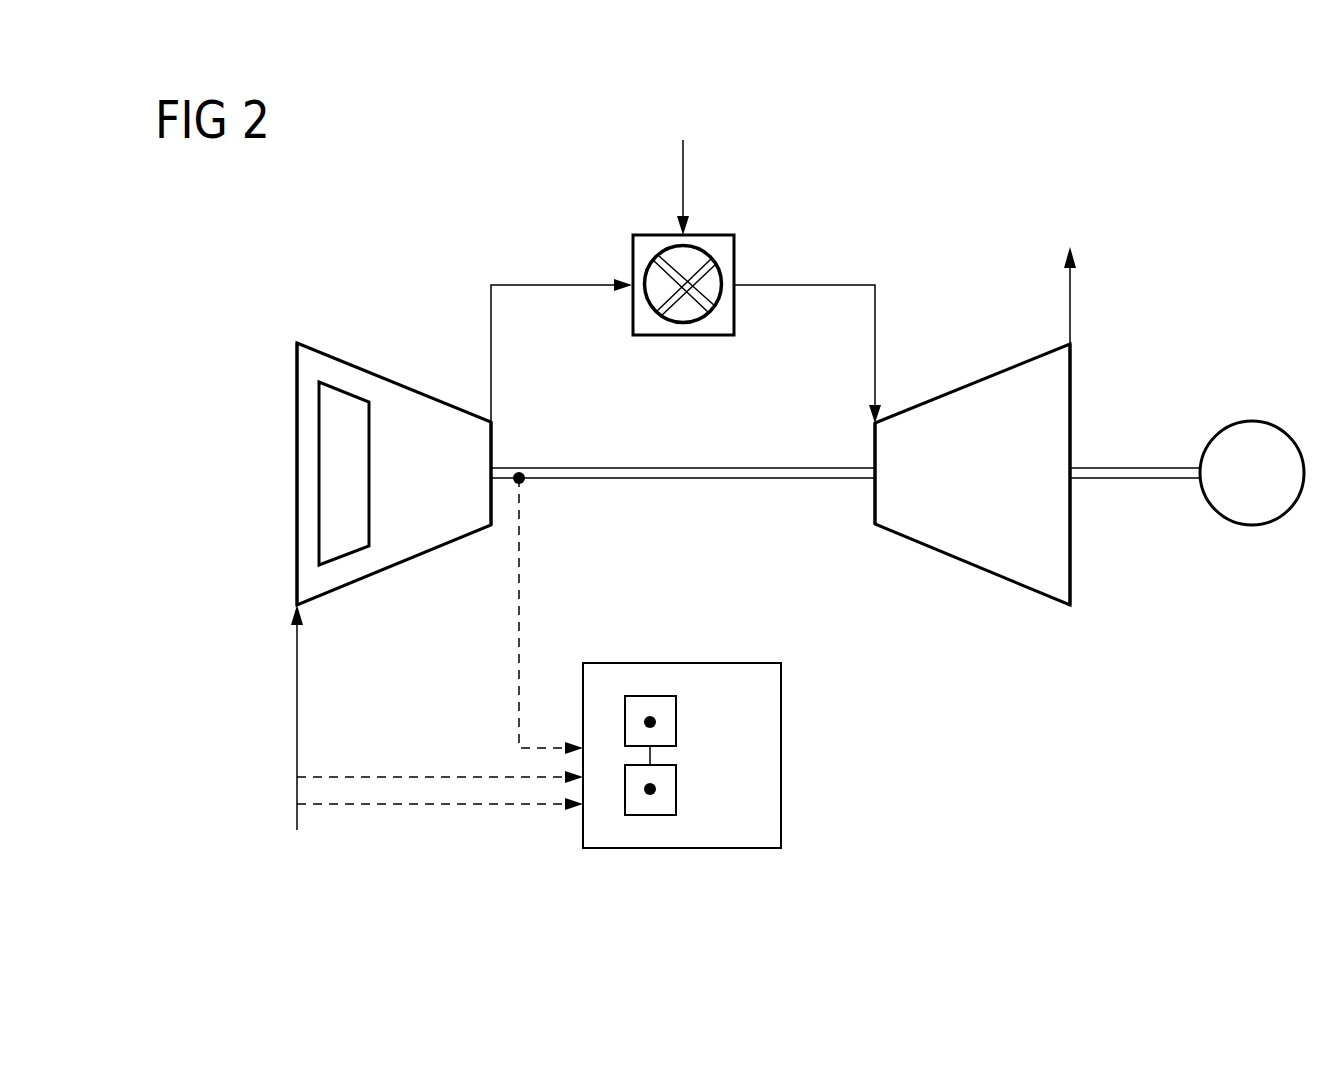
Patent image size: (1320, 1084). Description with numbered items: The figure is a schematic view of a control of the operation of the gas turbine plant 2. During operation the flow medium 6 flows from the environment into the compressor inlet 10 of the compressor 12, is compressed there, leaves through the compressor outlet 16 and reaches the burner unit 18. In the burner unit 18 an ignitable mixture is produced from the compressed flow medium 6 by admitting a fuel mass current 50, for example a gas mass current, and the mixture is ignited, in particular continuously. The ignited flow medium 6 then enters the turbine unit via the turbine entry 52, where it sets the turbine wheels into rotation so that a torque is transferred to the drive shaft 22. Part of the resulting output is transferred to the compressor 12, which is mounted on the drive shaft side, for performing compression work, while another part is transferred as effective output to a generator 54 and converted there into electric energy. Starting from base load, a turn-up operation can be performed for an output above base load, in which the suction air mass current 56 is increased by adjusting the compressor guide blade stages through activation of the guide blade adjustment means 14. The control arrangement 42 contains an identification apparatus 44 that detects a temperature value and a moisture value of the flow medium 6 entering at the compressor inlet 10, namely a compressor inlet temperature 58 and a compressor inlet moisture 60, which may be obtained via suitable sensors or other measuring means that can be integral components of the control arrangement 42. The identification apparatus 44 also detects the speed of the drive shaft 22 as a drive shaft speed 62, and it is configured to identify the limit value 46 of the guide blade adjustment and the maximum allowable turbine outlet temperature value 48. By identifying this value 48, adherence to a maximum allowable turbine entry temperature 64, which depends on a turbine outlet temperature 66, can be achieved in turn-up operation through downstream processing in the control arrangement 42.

The gas turbine plant 2 is at (506, 192).
The flow medium 6 is at (491, 310).
The compressor inlet 10 is at (305, 517).
The compressor 12 is at (367, 325).
The guide blade adjustment means 14 is at (323, 432).
The compressor outlet 16 is at (492, 438).
The burner unit 18 is at (734, 250).
The drive shaft 22 is at (580, 482).
The control arrangement 42 is at (771, 752).
The identification apparatus 44 is at (720, 734).
The limit value of the guide blade adjustment 46 is at (650, 790).
The maximum allowable turbine outlet temperature value 48 is at (650, 720).
The fuel mass current 50 is at (684, 182).
The turbine entry 52 is at (873, 512).
The generator 54 is at (1254, 421).
The suction air mass current 56 is at (297, 698).
The compressor inlet temperature 58 is at (339, 777).
The compressor inlet moisture 60 is at (368, 806).
The drive shaft speed 62 is at (520, 660).
The maximum allowable turbine entry temperature 64 is at (873, 421).
The turbine outlet temperature 66 is at (1072, 343).